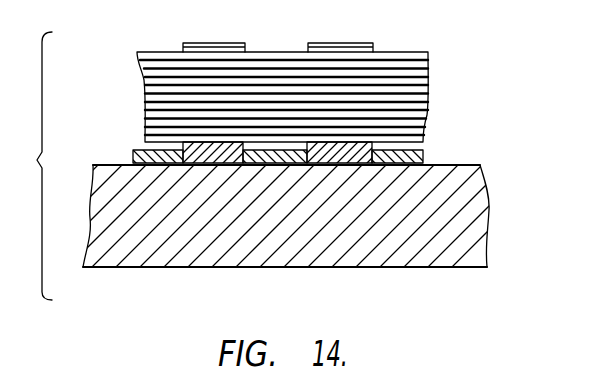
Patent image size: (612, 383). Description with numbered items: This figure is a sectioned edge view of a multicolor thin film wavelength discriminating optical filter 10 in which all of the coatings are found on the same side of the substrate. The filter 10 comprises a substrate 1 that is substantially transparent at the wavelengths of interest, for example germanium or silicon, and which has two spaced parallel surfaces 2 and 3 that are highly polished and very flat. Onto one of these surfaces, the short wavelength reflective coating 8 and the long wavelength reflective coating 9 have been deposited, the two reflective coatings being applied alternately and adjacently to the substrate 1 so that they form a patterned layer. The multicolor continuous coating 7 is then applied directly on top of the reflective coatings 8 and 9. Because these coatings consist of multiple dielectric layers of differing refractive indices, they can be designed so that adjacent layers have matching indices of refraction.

The substrate 1 is at (488, 223).
The surface 2 is at (481, 165).
The surface 3 is at (458, 267).
The multicolor continuous coating 7 is at (347, 43).
The short wavelength reflective coating 8 is at (135, 156).
The long wavelength reflective coating 9 is at (207, 165).
The multicolor thin film wavelength discriminating optical filter 10 is at (33, 166).